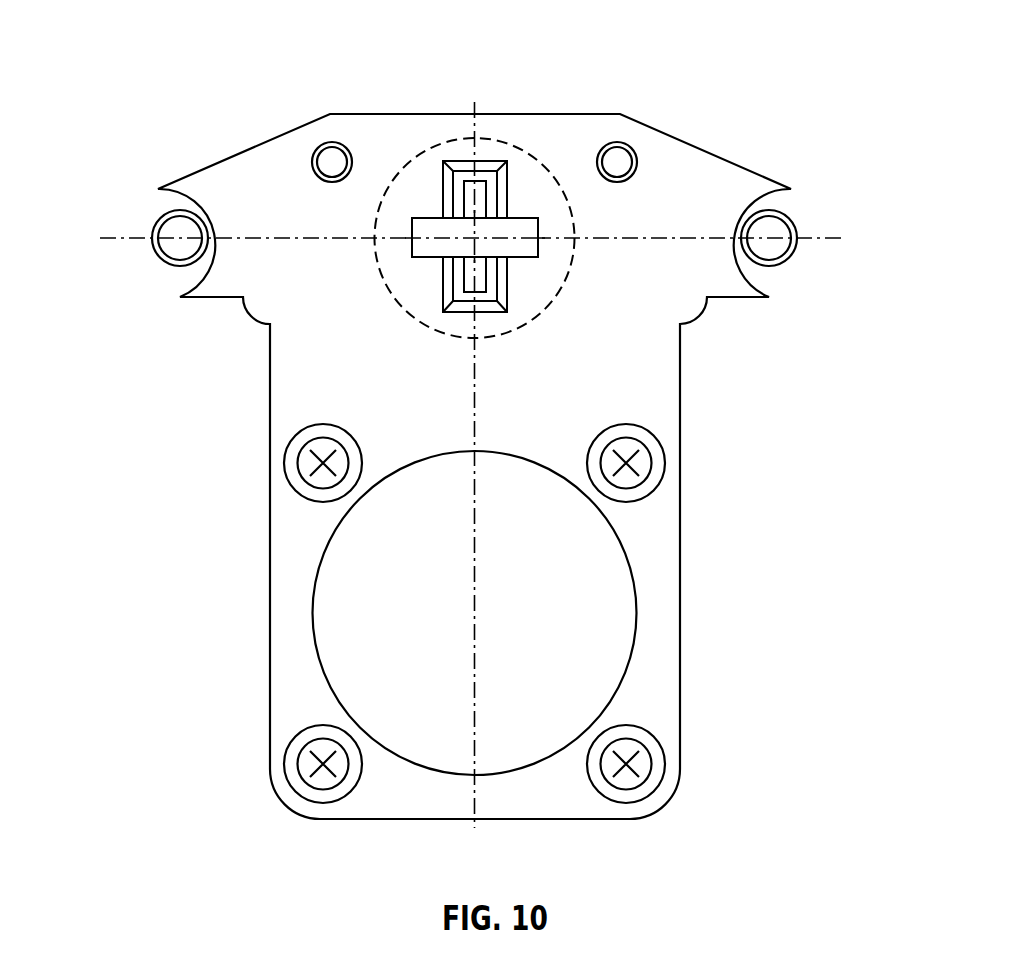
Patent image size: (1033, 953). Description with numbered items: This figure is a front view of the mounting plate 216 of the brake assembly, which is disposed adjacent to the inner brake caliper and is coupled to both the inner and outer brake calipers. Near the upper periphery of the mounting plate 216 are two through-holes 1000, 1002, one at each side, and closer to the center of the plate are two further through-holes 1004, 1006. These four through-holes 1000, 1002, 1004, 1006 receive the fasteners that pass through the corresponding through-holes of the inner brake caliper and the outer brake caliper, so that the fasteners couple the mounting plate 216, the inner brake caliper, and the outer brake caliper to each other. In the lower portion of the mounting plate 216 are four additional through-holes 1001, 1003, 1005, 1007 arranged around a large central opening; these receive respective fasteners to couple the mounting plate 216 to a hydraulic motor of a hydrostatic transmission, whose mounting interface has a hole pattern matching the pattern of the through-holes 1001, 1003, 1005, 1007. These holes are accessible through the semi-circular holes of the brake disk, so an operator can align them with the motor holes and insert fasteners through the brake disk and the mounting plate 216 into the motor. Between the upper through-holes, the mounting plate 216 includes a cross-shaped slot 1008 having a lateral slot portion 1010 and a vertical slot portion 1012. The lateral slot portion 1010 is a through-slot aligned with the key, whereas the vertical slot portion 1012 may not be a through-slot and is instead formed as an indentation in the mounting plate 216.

The mounting plate 216 is at (135, 110).
The through-hole 1000 is at (172, 238).
The through-hole 1001 is at (317, 463).
The through-hole 1002 is at (785, 215).
The through-hole 1003 is at (634, 463).
The through-hole 1004 is at (327, 157).
The through-hole 1005 is at (634, 768).
The through-hole 1006 is at (627, 158).
The through-hole 1007 is at (317, 768).
The slot 1008 is at (525, 180).
The lateral slot portion 1010 is at (432, 217).
The vertical slot portion 1012 is at (468, 183).